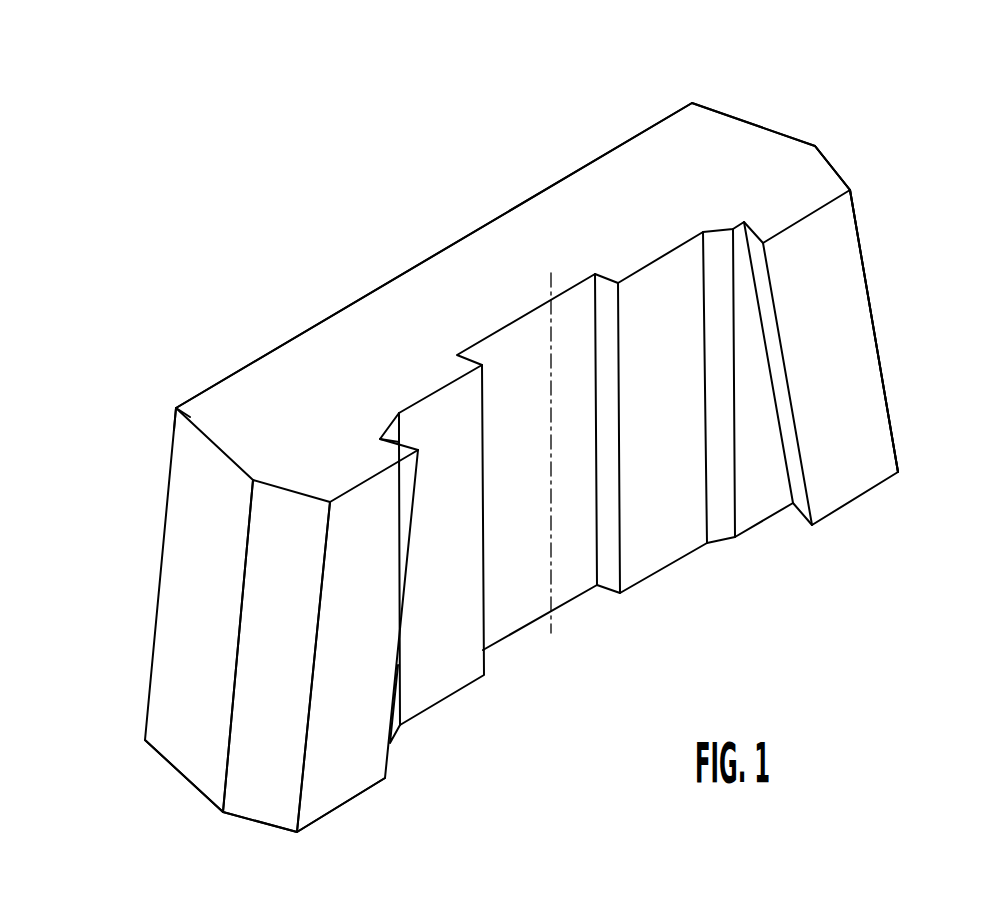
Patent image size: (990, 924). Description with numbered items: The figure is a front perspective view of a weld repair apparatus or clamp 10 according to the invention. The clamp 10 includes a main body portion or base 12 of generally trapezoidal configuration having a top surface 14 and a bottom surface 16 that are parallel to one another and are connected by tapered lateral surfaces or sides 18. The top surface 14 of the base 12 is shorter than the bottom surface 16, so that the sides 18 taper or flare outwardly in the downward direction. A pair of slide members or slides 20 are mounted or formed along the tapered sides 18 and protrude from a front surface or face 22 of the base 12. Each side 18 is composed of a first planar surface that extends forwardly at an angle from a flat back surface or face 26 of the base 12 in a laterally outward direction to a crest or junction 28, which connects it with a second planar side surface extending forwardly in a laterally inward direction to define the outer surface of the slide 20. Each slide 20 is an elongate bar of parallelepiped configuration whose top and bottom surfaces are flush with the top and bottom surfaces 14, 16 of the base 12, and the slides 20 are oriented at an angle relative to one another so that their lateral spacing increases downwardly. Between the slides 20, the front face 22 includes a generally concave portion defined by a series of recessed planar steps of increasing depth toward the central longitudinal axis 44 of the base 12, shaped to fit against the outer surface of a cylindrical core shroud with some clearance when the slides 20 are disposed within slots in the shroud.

The weld repair apparatus or clamp 10 is at (292, 289).
The main body portion or base 12 is at (173, 406).
The top surface 14 is at (687, 192).
The bottom surface 16 is at (260, 823).
The tapered lateral surfaces or sides 18 is at (200, 537).
The slide members or slides 20 is at (360, 803).
The front surface or face 22 is at (749, 491).
The back surface or face 26 is at (592, 163).
The crest or junction 28 is at (228, 717).
The central longitudinal axis 44 is at (552, 622).